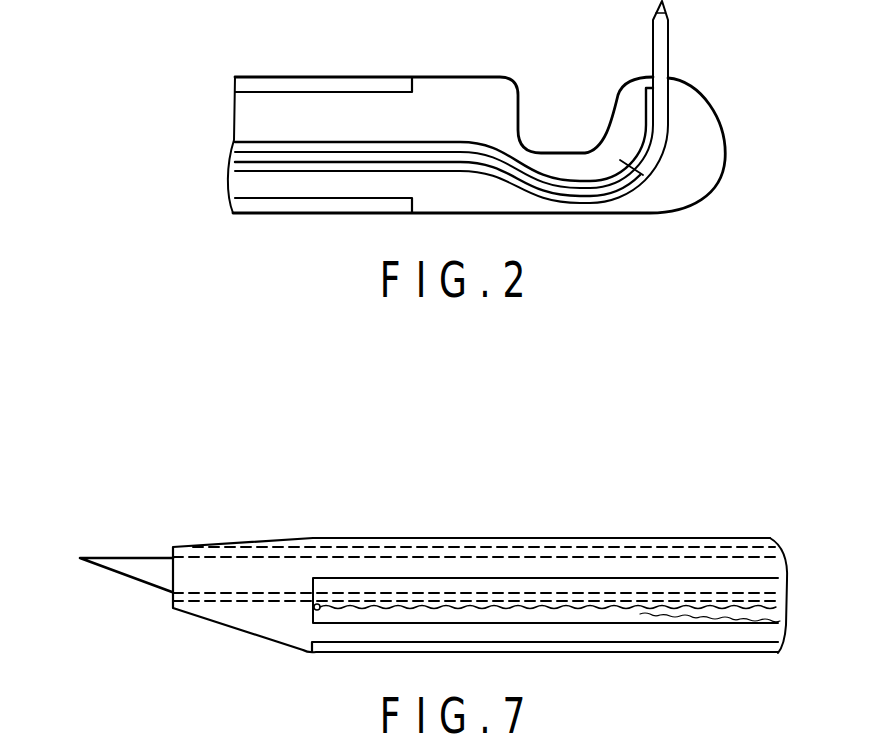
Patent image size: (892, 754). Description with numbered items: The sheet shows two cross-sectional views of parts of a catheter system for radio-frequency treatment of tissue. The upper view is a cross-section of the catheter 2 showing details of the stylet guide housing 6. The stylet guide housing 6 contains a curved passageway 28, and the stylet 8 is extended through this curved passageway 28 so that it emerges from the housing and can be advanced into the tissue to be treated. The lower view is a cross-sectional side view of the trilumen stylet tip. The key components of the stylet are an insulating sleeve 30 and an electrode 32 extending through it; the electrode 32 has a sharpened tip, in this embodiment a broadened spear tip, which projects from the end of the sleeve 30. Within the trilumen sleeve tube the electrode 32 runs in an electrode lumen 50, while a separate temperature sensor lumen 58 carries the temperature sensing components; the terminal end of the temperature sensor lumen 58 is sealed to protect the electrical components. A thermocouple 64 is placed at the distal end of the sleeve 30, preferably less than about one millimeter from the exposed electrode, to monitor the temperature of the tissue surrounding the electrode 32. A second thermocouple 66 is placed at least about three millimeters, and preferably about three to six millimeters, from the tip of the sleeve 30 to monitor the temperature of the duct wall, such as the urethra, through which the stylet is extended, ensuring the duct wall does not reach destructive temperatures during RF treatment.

In FIG. 2, the housing wall strip 2 is at (318, 86).
In FIG. 2, the stylet guide housing 6 is at (483, 75).
In FIG. 2, the stylet 8 is at (669, 40).
In FIG. 7, the stylet 8 is at (612, 528).
In FIG. 2, the curved passageway 28 is at (620, 160).
In FIG. 7, the insulating sleeve 30 is at (220, 542).
In FIG. 7, the electrode 32 is at (120, 555).
In FIG. 7, the electrode lumen 50 is at (213, 597).
In FIG. 7, the temperature sensor lumen 58 is at (407, 585).
In FIG. 7, the thermocouple 64 is at (318, 622).
In FIG. 7, the thermocouple 66 is at (632, 618).